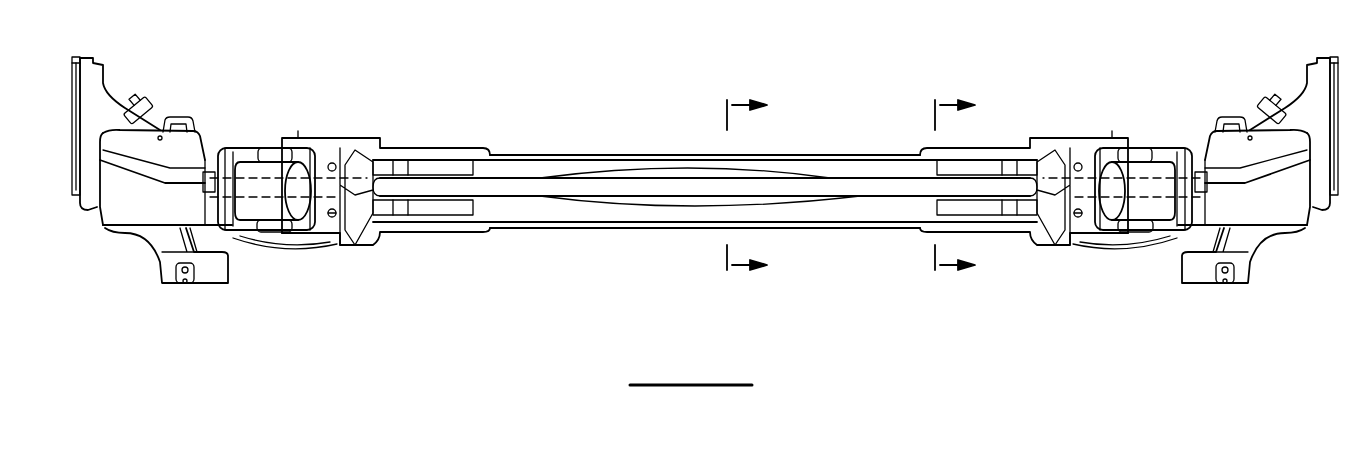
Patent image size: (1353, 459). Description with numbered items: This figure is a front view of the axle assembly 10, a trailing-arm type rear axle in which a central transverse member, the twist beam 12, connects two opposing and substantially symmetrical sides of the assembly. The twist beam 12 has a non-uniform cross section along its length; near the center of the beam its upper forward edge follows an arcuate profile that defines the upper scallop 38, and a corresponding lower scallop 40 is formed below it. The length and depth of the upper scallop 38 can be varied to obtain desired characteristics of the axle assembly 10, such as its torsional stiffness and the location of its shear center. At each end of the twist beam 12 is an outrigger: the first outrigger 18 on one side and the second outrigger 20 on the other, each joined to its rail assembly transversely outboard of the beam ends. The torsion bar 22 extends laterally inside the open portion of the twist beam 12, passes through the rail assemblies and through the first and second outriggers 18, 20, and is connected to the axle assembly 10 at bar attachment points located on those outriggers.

The axle assembly 10 is at (258, 56).
The twist beam 12 is at (705, 188).
The first outrigger 18 is at (230, 208).
The second outrigger 20 is at (1180, 208).
The torsion bar 22 is at (627, 187).
The upper scallop 38 is at (856, 152).
The lower scallop 40 is at (835, 228).